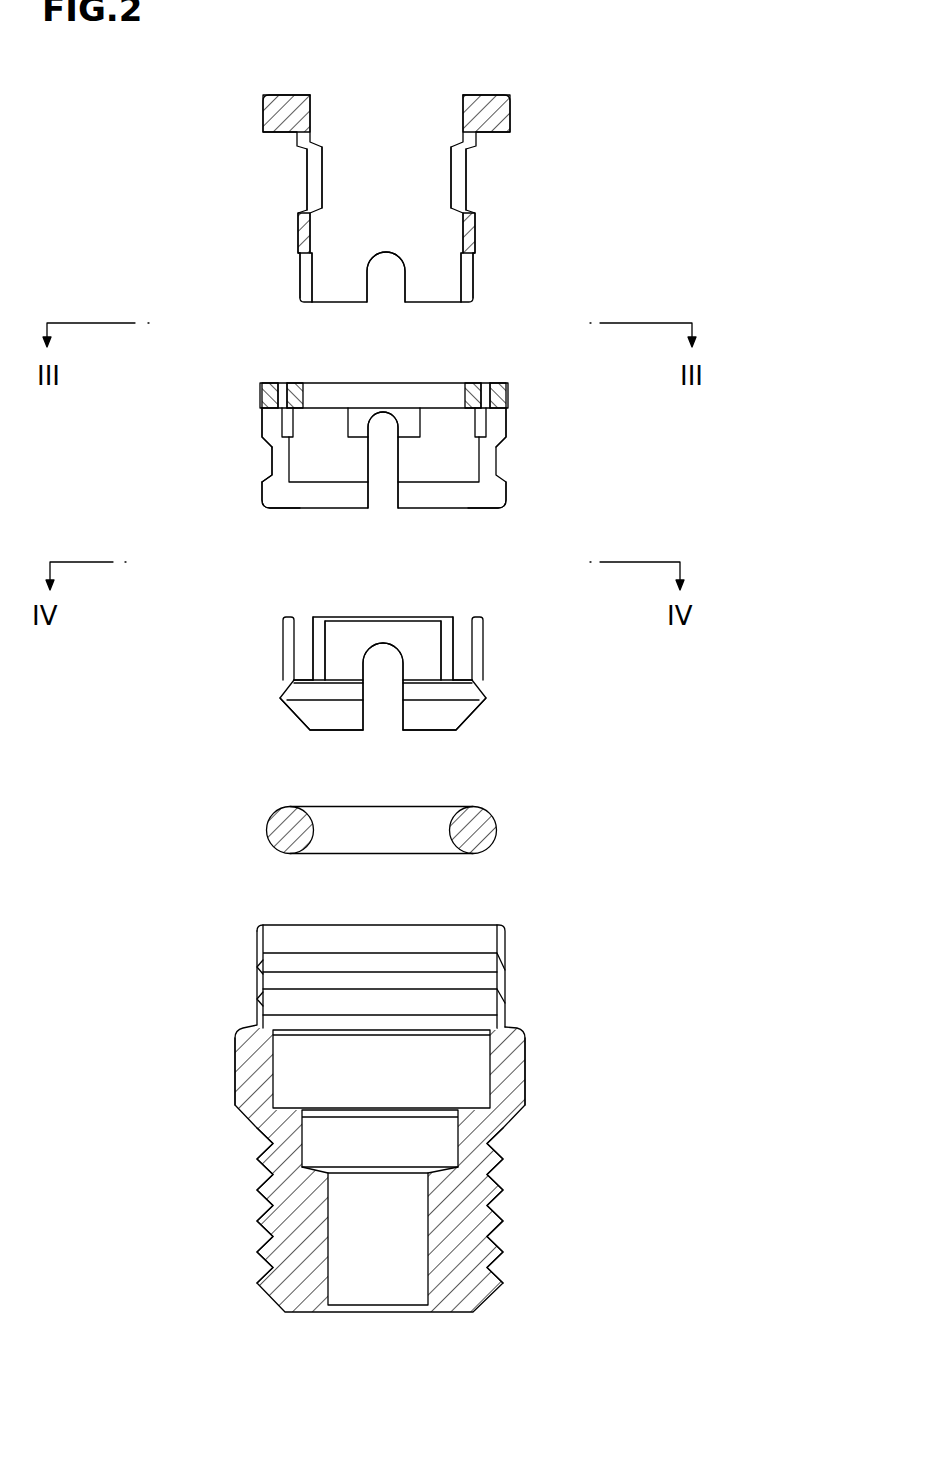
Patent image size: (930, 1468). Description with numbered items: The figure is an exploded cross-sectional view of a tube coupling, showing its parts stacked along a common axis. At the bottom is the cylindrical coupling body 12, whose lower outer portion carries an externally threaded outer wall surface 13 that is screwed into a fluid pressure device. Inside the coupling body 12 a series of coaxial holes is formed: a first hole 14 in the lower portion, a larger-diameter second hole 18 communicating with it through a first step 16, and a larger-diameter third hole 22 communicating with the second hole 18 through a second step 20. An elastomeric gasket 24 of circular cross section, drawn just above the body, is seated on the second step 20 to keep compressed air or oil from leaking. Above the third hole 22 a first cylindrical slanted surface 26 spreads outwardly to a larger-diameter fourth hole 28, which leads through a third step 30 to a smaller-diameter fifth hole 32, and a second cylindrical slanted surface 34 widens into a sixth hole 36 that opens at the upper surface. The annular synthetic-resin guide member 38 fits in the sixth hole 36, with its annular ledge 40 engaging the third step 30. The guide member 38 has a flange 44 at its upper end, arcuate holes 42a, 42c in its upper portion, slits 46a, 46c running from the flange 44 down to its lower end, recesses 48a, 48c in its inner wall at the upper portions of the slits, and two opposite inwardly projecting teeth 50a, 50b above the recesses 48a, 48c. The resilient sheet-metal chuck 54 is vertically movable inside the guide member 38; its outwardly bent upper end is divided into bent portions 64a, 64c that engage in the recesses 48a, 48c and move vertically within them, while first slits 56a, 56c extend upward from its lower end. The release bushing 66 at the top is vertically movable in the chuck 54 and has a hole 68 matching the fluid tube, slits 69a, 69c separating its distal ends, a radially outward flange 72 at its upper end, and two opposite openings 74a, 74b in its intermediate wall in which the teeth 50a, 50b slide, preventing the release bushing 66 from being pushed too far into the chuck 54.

The coupling body 12 is at (530, 978).
The externally threaded outer wall surface 13 is at (503, 1200).
The first hole 14 is at (343, 1247).
The first step 16 is at (257, 1208).
The second hole 18 is at (300, 1145).
The second step 20 is at (320, 1135).
The third hole 22 is at (237, 1087).
The elastomeric gasket 24 is at (497, 828).
The first cylindrical slanted surface 26 is at (287, 1072).
The fourth hole 28 is at (263, 1008).
The third step 30 is at (258, 985).
The fifth hole 32 is at (277, 977).
The second cylindrical slanted surface 34 is at (258, 967).
The sixth hole 36 is at (278, 935).
The guide member 38 is at (542, 410).
The annular ledge 40 is at (263, 467).
The arcuate hole 42a is at (287, 380).
The arcuate hole 42c is at (485, 382).
The flange 44 is at (260, 407).
The slit 46a is at (263, 425).
The slit 46c is at (498, 427).
The recess 48a is at (277, 402).
The recess 48c is at (487, 423).
The tooth 50a is at (323, 420).
The tooth 50b is at (488, 472).
The chuck 54 is at (578, 658).
The first slit 56a is at (287, 668).
The first slit 56c is at (480, 663).
The bent portion 64a is at (283, 618).
The bent portion 64c is at (482, 618).
The release bushing 66 is at (488, 78).
The hole 68 is at (335, 105).
The slit 69a is at (302, 260).
The slit 69c is at (473, 272).
The flange 72 is at (262, 107).
The opening 74a is at (310, 165).
The opening 74b is at (463, 168).